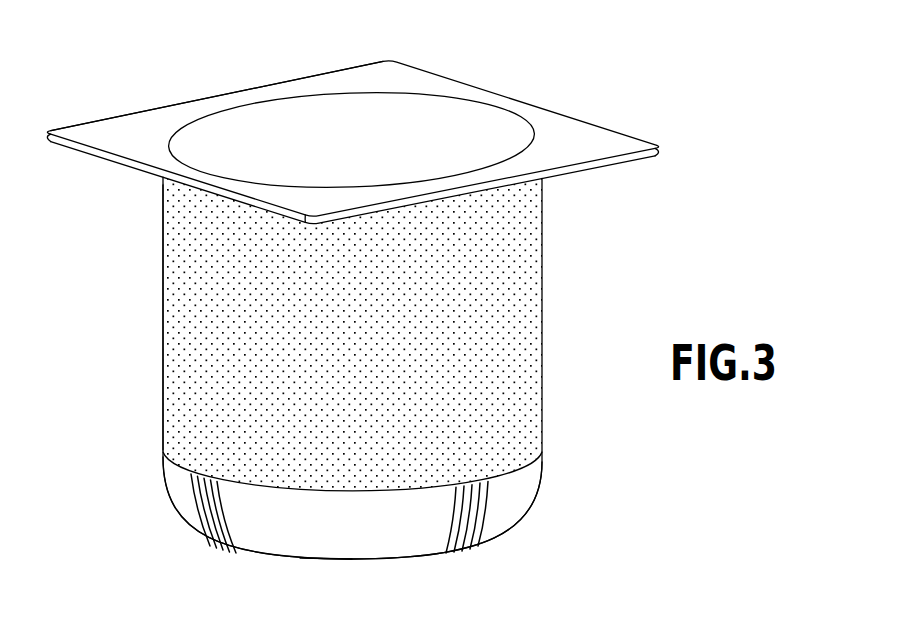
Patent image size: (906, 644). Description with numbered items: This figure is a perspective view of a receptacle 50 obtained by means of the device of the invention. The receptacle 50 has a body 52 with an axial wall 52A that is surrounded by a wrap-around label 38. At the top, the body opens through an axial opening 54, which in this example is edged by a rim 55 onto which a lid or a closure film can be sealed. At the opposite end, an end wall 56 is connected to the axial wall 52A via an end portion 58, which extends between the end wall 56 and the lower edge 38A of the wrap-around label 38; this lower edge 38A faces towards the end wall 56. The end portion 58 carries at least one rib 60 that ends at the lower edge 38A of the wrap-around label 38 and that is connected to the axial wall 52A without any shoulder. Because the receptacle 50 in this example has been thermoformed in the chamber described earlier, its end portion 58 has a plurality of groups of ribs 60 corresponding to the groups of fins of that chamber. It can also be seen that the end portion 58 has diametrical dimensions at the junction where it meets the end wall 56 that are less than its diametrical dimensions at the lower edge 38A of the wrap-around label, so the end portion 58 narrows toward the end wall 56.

The receptacle 50 is at (497, 66).
The body 52 is at (555, 252).
The axial wall 52A is at (143, 185).
The axial opening 54 is at (258, 97).
The rim 55 is at (105, 132).
The end wall 56 is at (372, 560).
The end portion 58 is at (143, 457).
The rib 60 is at (222, 546).
The wrap-around label 38 is at (503, 330).
The lower edge of the wrap-around label 38A is at (405, 497).